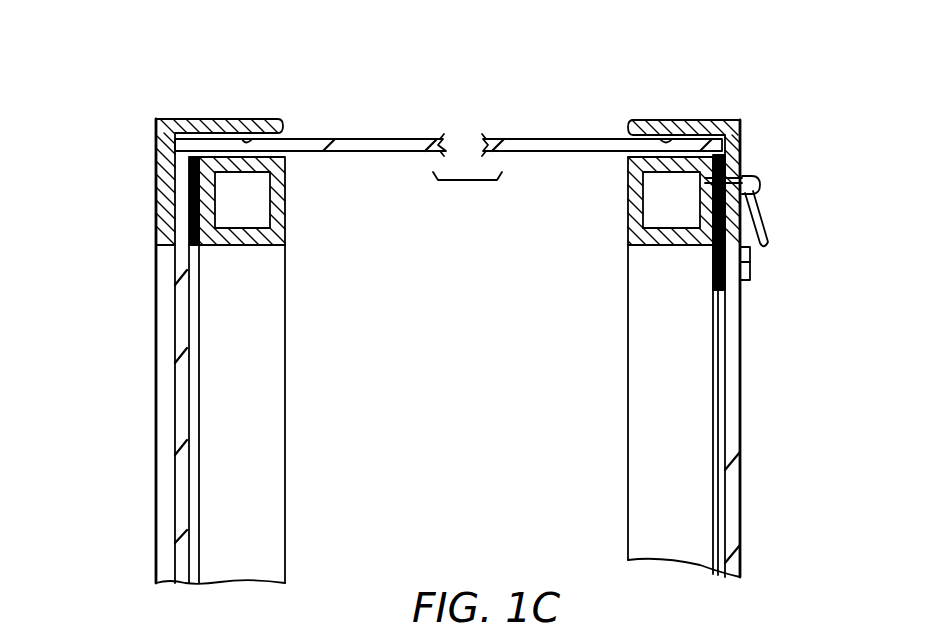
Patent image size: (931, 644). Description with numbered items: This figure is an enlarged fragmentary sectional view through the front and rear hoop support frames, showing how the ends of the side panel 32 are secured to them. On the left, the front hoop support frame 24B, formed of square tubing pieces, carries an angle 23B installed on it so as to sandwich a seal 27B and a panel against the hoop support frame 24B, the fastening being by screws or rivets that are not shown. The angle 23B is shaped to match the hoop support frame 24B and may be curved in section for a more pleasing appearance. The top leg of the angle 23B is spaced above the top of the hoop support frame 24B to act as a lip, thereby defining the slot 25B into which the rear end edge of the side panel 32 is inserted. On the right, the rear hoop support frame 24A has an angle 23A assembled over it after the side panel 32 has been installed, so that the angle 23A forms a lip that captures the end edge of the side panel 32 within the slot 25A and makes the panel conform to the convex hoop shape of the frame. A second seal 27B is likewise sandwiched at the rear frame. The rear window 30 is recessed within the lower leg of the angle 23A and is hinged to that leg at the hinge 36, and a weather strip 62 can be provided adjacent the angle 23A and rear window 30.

The angle 23A is at (703, 111).
The angle 23B is at (156, 231).
The rear hoop support frame 24A is at (628, 212).
The front hoop support frame 24B is at (288, 341).
The slot 25A is at (668, 137).
The slot 25B is at (246, 137).
The seal 27B is at (190, 186).
The rear window 30 is at (742, 352).
The side panel 32 is at (372, 137).
The hinge 36 is at (750, 274).
The weather strip 62 is at (762, 220).